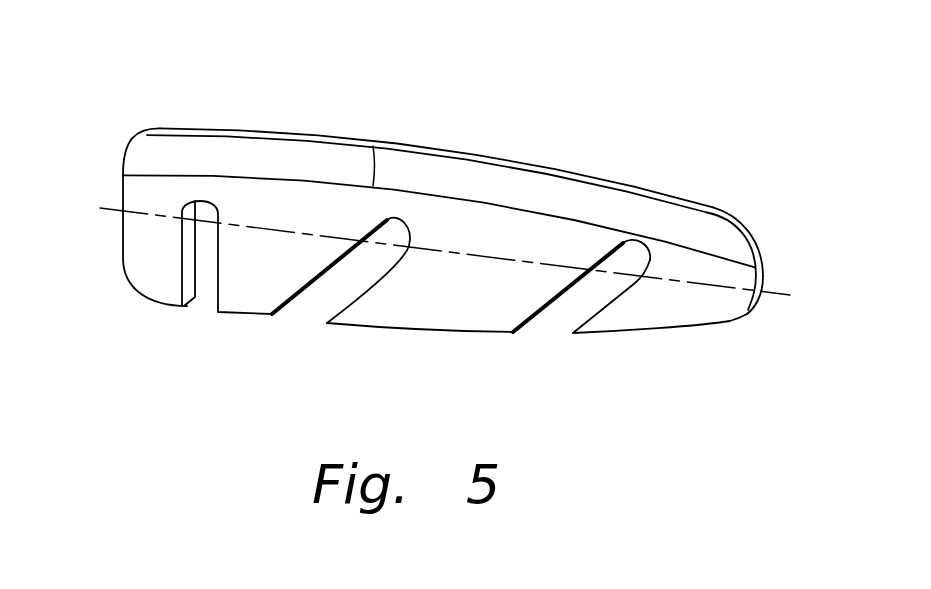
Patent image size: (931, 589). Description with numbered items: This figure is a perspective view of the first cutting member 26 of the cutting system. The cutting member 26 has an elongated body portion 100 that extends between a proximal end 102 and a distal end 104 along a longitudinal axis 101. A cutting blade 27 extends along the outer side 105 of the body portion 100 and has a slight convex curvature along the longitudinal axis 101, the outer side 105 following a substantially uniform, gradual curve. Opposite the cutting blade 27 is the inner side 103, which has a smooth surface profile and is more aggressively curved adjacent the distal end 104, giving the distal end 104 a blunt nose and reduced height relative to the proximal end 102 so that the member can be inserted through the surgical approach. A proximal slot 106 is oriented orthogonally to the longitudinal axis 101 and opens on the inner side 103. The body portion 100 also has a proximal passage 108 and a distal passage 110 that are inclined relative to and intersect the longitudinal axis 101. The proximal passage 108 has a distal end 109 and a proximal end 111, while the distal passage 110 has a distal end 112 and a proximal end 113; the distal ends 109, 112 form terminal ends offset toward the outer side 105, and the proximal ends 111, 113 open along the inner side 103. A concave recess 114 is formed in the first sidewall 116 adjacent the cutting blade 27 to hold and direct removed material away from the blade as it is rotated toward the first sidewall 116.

The first cutting member 26 is at (191, 92).
The cutting blade 27 is at (452, 155).
The elongated body portion 100 is at (437, 308).
The longitudinal axis 101 is at (773, 292).
The proximal end 102 is at (125, 233).
The inner side 103 is at (347, 327).
The distal end 104 is at (747, 313).
The outer side 105 is at (142, 172).
The proximal slot 106 is at (195, 262).
The proximal passage 108 is at (312, 300).
The distal end of proximal passage 109 is at (412, 233).
The distal passage 110 is at (563, 312).
The proximal end of proximal passage 111 is at (327, 323).
The distal end of distal passage 112 is at (640, 240).
The proximal end of distal passage 113 is at (573, 335).
The concave recess 114 is at (307, 158).
The first sidewall 116 is at (530, 236).